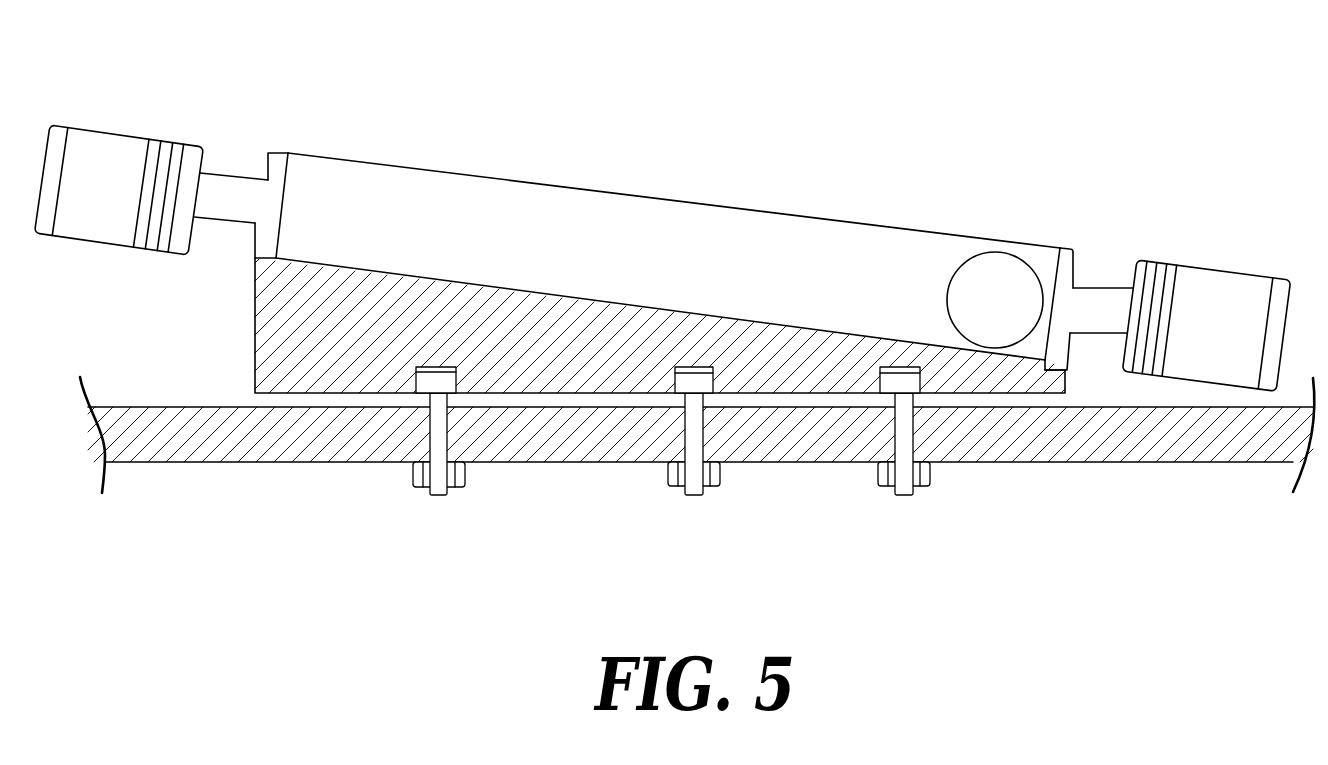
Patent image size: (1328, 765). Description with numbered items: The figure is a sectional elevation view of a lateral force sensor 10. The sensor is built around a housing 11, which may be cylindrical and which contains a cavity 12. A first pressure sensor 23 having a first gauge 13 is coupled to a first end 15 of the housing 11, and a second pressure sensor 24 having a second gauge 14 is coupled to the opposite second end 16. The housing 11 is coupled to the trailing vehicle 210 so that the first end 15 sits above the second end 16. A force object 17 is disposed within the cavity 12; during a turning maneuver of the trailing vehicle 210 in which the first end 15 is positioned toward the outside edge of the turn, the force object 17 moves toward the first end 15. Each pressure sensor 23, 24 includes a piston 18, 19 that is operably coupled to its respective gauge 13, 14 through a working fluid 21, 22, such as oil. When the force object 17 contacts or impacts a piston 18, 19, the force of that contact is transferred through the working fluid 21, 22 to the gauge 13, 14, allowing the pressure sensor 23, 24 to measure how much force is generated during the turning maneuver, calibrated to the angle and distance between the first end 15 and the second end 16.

The lateral force sensor 10 is at (657, 112).
The housing 11 is at (738, 210).
The cavity 12 is at (572, 262).
The first gauge 13 is at (53, 148).
The second gauge 14 is at (1280, 308).
The first end 15 is at (268, 132).
The second end 16 is at (1073, 235).
The force object 17 is at (963, 310).
The piston 18 is at (270, 203).
The piston 19 is at (1060, 288).
The working fluid 21 is at (107, 208).
The working fluid 22 is at (1207, 350).
The first pressure sensor 23 is at (102, 260).
The second pressure sensor 24 is at (1238, 250).
The trailing vehicle 210 is at (515, 430).